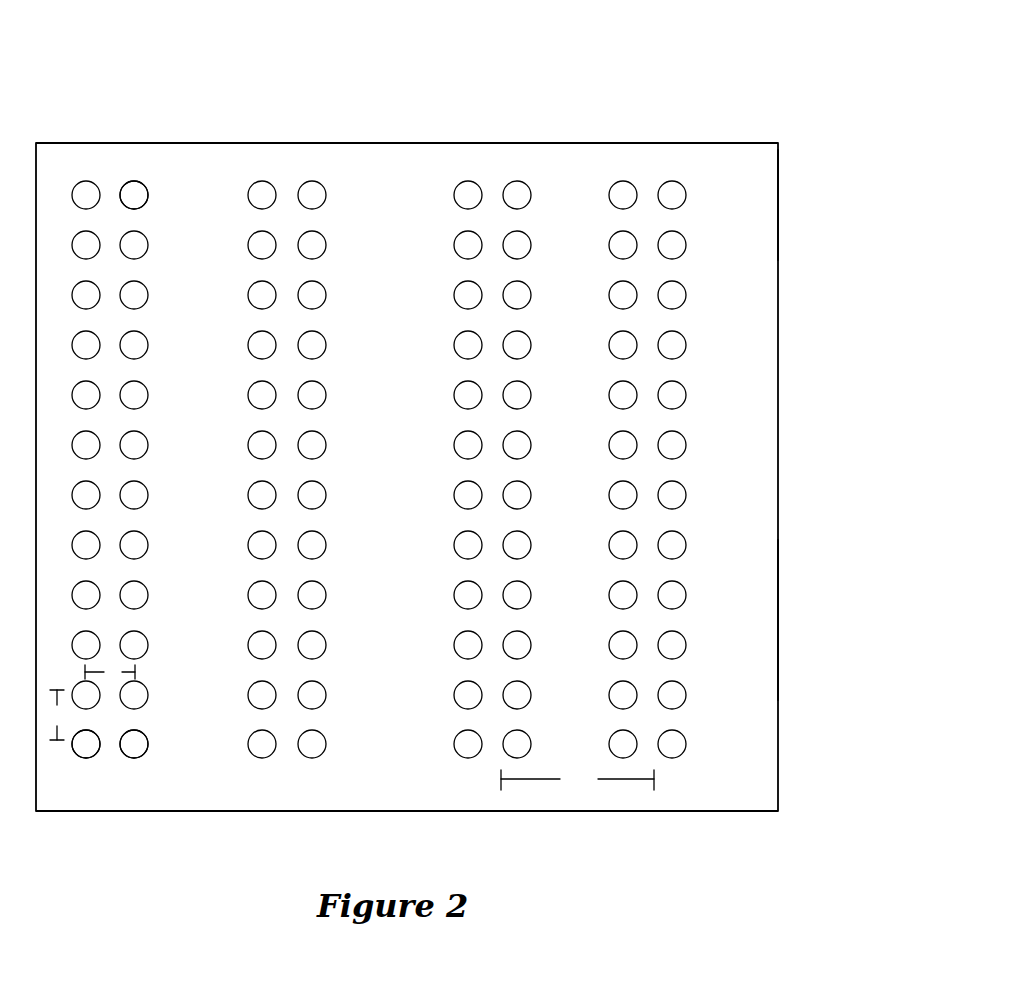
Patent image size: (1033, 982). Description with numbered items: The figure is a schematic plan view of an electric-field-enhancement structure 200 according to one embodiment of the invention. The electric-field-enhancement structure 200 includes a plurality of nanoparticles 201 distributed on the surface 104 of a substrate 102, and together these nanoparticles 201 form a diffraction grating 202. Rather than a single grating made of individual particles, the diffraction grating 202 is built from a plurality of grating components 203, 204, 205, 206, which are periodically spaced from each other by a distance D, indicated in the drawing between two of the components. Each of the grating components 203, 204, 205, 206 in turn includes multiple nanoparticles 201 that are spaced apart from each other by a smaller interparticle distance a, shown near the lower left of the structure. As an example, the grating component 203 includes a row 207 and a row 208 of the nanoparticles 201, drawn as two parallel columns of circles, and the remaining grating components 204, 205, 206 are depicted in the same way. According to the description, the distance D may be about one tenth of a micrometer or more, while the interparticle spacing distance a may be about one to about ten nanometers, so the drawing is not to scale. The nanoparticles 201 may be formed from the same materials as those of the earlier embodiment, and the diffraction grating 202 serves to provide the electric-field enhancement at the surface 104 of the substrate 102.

The electric-field-enhancement structure 200 is at (464, 446).
The substrate 102 is at (778, 224).
The surface 104 is at (762, 203).
The nanoparticle 201 is at (136, 196).
The diffraction grating 202 is at (733, 623).
The grating component 203 is at (68, 168).
The grating component 204 is at (252, 168).
The grating component 205 is at (455, 167).
The grating component 206 is at (612, 168).
The row 207 is at (87, 763).
The row 208 is at (140, 765).